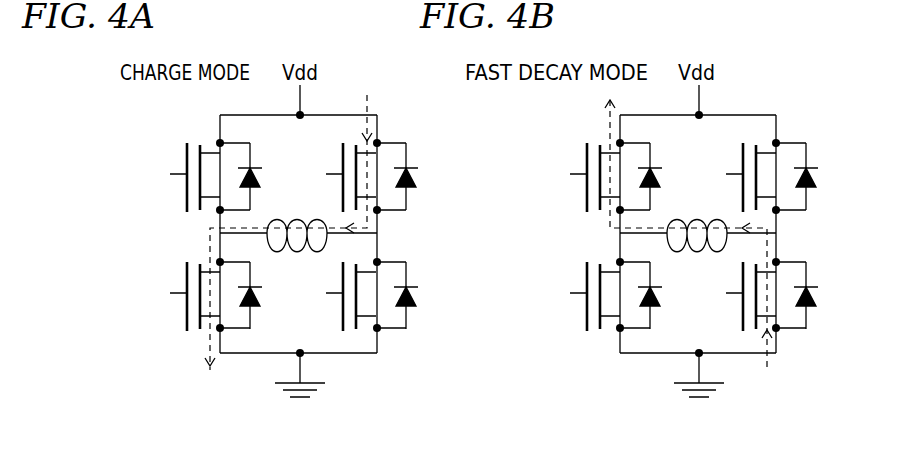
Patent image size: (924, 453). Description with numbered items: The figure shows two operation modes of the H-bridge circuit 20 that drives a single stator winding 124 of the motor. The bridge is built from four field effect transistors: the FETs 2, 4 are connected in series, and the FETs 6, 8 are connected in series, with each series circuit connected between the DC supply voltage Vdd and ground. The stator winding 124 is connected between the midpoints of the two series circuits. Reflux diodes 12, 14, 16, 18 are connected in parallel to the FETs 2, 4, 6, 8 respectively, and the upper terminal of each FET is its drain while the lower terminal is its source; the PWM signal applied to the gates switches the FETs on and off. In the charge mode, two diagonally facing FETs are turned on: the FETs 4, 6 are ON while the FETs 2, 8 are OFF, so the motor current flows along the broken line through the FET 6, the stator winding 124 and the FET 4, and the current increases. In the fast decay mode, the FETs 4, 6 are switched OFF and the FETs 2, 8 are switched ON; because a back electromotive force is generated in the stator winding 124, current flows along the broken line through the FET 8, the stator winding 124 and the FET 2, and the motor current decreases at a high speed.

In FIG. 4A, the field effect transistor 2 is at (185, 160).
In FIG. 4B, the field effect transistor 2 is at (585, 160).
In FIG. 4A, the field effect transistor 4 is at (185, 282).
In FIG. 4B, the field effect transistor 4 is at (585, 282).
In FIG. 4A, the field effect transistor 6 is at (343, 160).
In FIG. 4B, the field effect transistor 6 is at (743, 160).
In FIG. 4A, the field effect transistor 8 is at (343, 282).
In FIG. 4B, the field effect transistor 8 is at (743, 282).
In FIG. 4A, the reflux diode 12 is at (262, 176).
In FIG. 4B, the reflux diode 12 is at (662, 176).
In FIG. 4A, the reflux diode 14 is at (262, 300).
In FIG. 4B, the reflux diode 14 is at (662, 300).
In FIG. 4A, the reflux diode 16 is at (412, 178).
In FIG. 4B, the reflux diode 16 is at (812, 178).
In FIG. 4A, the reflux diode 18 is at (412, 300).
In FIG. 4B, the reflux diode 18 is at (812, 300).
In FIG. 4A, the H-bridge circuit 20 is at (306, 256).
In FIG. 4B, the H-bridge circuit 20 is at (706, 256).
In FIG. 4A, the stator winding 124 is at (283, 221).
In FIG. 4B, the stator winding 124 is at (683, 221).